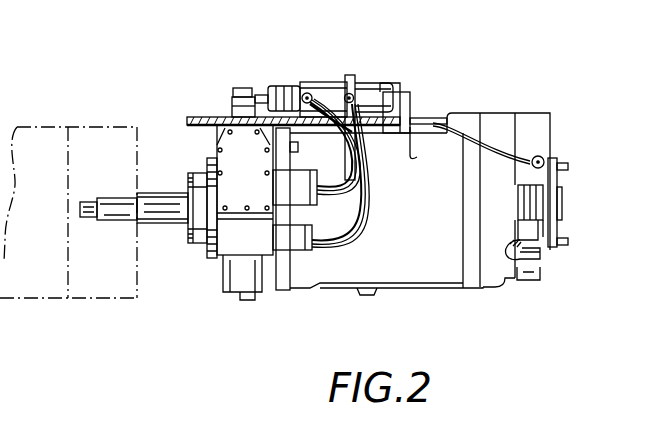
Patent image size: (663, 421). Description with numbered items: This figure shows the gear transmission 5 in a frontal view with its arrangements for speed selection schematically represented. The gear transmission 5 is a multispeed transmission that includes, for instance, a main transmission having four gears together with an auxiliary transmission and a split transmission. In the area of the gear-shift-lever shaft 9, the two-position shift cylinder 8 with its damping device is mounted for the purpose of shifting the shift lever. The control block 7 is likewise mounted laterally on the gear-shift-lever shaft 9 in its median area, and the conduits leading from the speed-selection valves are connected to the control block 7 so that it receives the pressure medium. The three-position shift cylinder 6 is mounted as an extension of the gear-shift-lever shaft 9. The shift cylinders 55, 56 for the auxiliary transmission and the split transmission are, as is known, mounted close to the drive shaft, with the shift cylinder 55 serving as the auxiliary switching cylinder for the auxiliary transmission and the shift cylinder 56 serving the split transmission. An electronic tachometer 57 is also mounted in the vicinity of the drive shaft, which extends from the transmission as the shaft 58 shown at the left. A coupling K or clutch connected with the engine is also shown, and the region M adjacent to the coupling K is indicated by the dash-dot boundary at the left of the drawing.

The gear transmission 5 is at (506, 80).
The three-position shift cylinder 6 is at (245, 275).
The control block 7 is at (345, 226).
The two-position shift cylinder 8 is at (332, 87).
The gear-shift-lever shaft 9 is at (245, 87).
The shift cylinder for the auxiliary transmission 55 is at (532, 130).
The shift cylinder for the split transmission 56 is at (530, 270).
The electronic tachometer 57 is at (540, 253).
The output shaft 58 is at (118, 212).
The motor region M is at (45, 143).
The coupling K is at (103, 143).